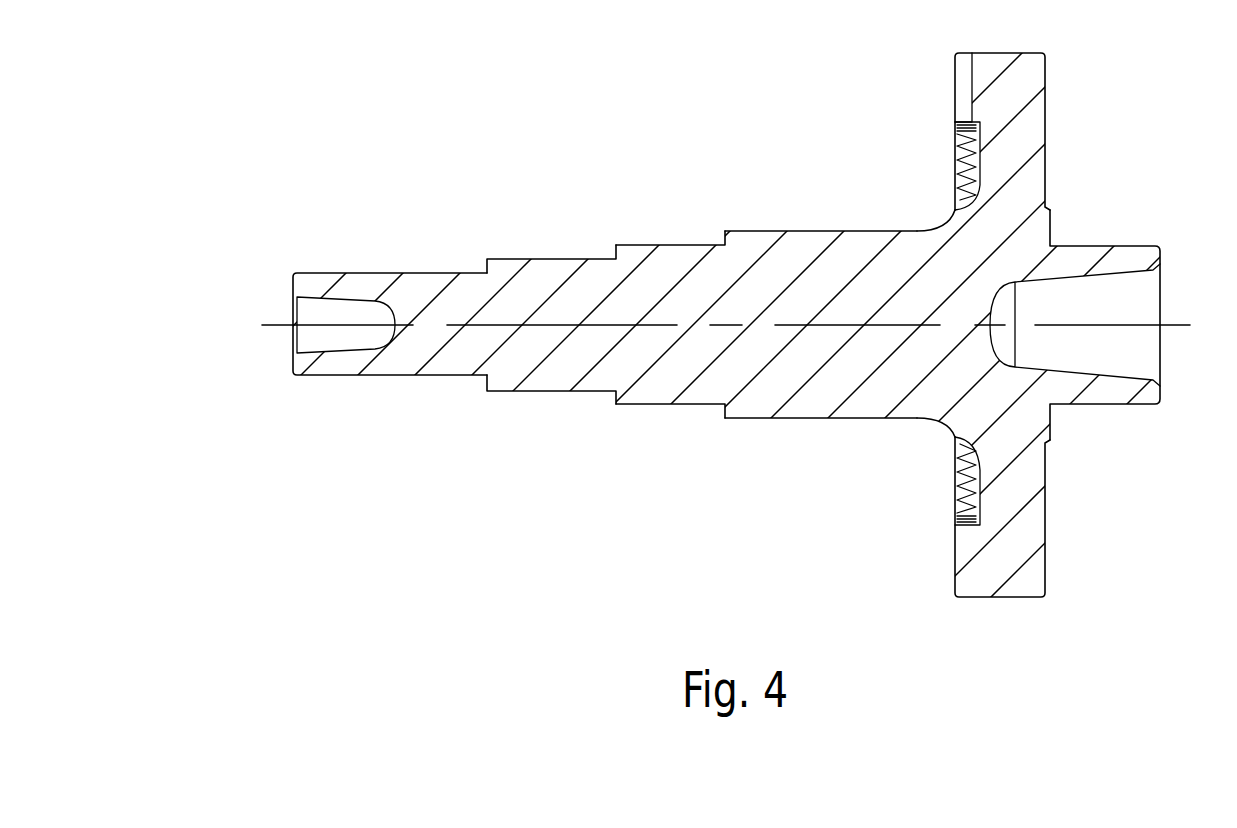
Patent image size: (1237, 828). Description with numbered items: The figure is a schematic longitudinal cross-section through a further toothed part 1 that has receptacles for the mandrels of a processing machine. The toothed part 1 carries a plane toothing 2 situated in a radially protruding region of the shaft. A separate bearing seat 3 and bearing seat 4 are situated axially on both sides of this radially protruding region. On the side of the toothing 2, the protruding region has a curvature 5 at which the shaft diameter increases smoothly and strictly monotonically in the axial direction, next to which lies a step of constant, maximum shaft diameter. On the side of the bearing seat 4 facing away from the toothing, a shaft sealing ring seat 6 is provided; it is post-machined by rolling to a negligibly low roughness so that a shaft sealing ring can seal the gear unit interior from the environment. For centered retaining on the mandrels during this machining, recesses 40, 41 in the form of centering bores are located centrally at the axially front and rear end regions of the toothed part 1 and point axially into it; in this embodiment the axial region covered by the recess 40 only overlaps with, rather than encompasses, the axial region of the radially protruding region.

The toothed part 1 is at (847, 260).
The plane toothing 2 is at (945, 146).
The bearing seat 3 is at (1105, 234).
The bearing seat 4 is at (673, 234).
The curvature 5 is at (918, 430).
The shaft sealing ring seat 6 is at (549, 402).
The bore 40 is at (1095, 343).
The bore 41 is at (325, 312).